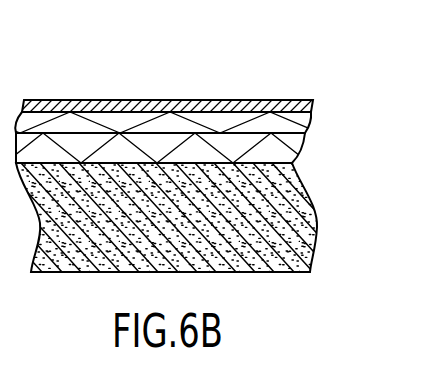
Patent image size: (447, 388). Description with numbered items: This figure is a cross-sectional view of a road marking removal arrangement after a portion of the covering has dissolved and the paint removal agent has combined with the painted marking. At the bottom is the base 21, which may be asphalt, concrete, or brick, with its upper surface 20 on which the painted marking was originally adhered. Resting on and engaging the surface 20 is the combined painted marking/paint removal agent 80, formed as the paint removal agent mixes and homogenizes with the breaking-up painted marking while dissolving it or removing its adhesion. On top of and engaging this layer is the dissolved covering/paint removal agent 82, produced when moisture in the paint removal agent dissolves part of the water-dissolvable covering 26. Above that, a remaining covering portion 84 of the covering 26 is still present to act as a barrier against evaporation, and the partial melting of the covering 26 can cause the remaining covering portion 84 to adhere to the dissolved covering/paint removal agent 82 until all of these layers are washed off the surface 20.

The surface 20 is at (97, 163).
The base 21 is at (276, 233).
The covering 26 is at (312, 103).
The combined painted marking/paint removal agent 80 is at (296, 148).
The dissolved covering/paint removal agent 82 is at (306, 121).
The remaining covering portion 84 is at (105, 101).